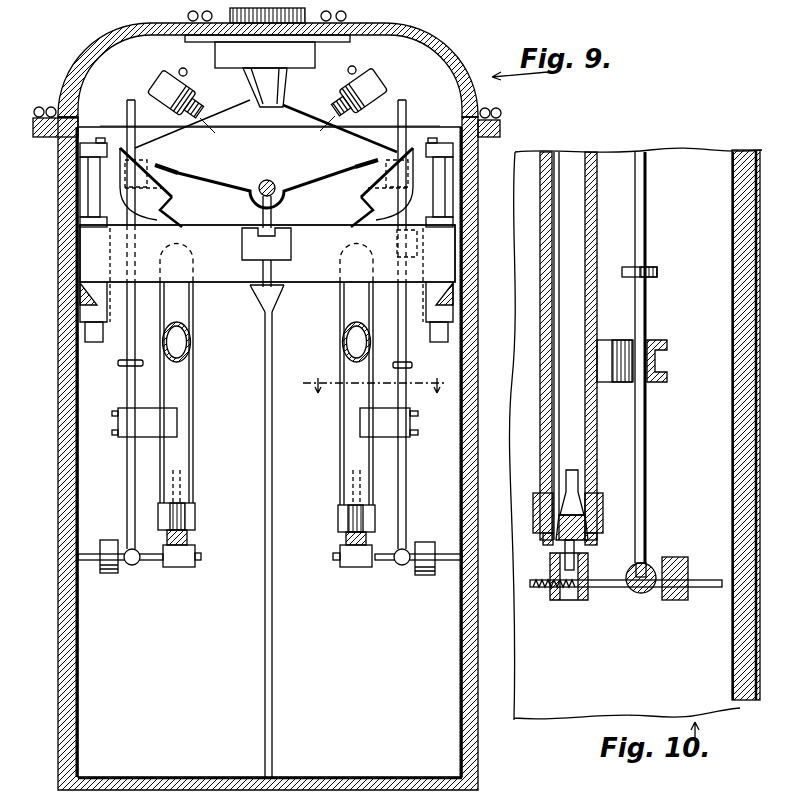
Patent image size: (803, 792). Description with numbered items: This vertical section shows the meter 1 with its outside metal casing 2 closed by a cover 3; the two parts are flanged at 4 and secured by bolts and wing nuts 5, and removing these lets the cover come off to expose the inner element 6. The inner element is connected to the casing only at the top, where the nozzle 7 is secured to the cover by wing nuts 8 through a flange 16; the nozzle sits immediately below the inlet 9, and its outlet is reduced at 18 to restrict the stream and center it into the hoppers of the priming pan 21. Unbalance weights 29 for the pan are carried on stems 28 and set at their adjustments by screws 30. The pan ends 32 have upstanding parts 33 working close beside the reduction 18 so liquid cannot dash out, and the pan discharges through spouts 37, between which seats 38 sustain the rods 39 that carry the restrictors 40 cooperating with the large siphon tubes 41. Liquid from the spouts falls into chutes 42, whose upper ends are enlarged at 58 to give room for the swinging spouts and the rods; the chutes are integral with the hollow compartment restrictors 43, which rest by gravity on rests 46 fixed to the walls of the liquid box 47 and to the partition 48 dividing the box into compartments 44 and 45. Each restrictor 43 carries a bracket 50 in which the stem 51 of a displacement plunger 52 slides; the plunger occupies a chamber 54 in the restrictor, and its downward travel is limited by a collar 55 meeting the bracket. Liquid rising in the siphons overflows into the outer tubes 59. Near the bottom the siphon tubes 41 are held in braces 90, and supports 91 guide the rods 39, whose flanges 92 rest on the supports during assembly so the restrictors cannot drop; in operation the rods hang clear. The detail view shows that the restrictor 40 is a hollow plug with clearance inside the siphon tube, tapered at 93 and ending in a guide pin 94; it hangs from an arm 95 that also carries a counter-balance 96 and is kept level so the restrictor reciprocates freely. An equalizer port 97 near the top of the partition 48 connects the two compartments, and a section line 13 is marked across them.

In FIG. 9, the meter 1 is at (60, 86).
In FIG. 9, the outside metal casing 2 is at (478, 142).
In FIG. 10, the outside metal casing 2 is at (757, 150).
In FIG. 9, the cover 3 is at (442, 53).
In FIG. 9, the flange 4 is at (33, 134).
In FIG. 9, the bolts and wing nuts 5 is at (36, 109).
In FIG. 9, the inner element 6 is at (118, 126).
In FIG. 9, the nozzle 7 is at (190, 20).
In FIG. 9, the wing nuts 8 is at (205, 20).
In FIG. 9, the inlet opening 9 is at (270, 24).
In FIG. 9, the section line 13 is at (375, 377).
In FIG. 9, the flange 16 is at (322, 39).
In FIG. 9, the reduction 18 is at (283, 101).
In FIG. 9, the priming pan 21 is at (266, 182).
In FIG. 9, the stems 28 is at (196, 115).
In FIG. 9, the pan unbalance weights 29 is at (170, 80).
In FIG. 9, the screws 30 is at (190, 66).
In FIG. 9, the pan ends 32 is at (192, 118).
In FIG. 9, the upstanding parts 33 is at (340, 123).
In FIG. 9, the spouts 37 is at (146, 150).
In FIG. 9, the seats 38 is at (266, 179).
In FIG. 9, the rods 39 is at (123, 362).
In FIG. 10, the rods 39 is at (647, 189).
In FIG. 9, the restrictors 40 is at (182, 544).
In FIG. 10, the restrictors 40 is at (586, 552).
In FIG. 9, the large siphon tubes 41 is at (193, 455).
In FIG. 10, the large siphon tubes 41 is at (571, 225).
In FIG. 9, the chutes 42 is at (266, 212).
In FIG. 9, the compartment restrictors 43 is at (185, 242).
In FIG. 9, the compartment 44 is at (354, 628).
In FIG. 9, the compartment 45 is at (169, 628).
In FIG. 9, the rests 46 is at (80, 292).
In FIG. 9, the liquid box 47 is at (72, 425).
In FIG. 10, the liquid box 47 is at (733, 177).
In FIG. 9, the partition 48 is at (263, 640).
In FIG. 9, the bracket 50 is at (80, 183).
In FIG. 9, the stem 51 is at (80, 222).
In FIG. 9, the displacement plunger 52 is at (80, 320).
In FIG. 9, the chambers 54 is at (266, 285).
In FIG. 9, the collars 55 is at (500, 113).
In FIG. 9, the enlargements 58 is at (80, 150).
In FIG. 9, the outer tubes 59 is at (192, 340).
In FIG. 9, the braces 90 is at (196, 518).
In FIG. 10, the braces 90 is at (603, 520).
In FIG. 9, the supports 91 is at (178, 421).
In FIG. 10, the supports 91 is at (606, 350).
In FIG. 9, the flanges 92 is at (122, 367).
In FIG. 10, the flanges 92 is at (658, 272).
In FIG. 10, the taper 93 is at (584, 516).
In FIG. 10, the pin 94 is at (578, 478).
In FIG. 9, the arm 95 is at (155, 562).
In FIG. 10, the arm 95 is at (608, 590).
In FIG. 9, the counter-balance 96 is at (110, 574).
In FIG. 10, the counter-balance 96 is at (675, 602).
In FIG. 9, the equalizer port 97 is at (292, 245).